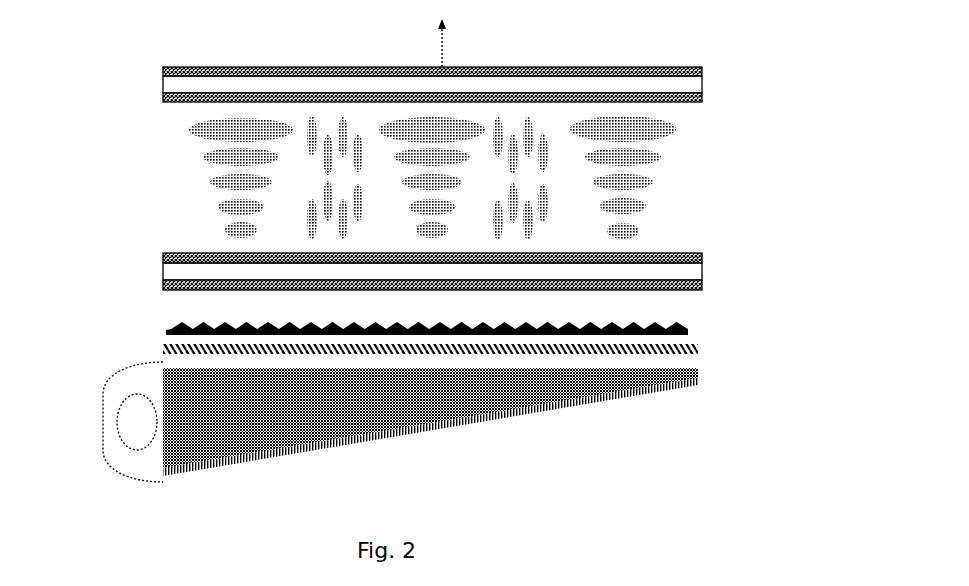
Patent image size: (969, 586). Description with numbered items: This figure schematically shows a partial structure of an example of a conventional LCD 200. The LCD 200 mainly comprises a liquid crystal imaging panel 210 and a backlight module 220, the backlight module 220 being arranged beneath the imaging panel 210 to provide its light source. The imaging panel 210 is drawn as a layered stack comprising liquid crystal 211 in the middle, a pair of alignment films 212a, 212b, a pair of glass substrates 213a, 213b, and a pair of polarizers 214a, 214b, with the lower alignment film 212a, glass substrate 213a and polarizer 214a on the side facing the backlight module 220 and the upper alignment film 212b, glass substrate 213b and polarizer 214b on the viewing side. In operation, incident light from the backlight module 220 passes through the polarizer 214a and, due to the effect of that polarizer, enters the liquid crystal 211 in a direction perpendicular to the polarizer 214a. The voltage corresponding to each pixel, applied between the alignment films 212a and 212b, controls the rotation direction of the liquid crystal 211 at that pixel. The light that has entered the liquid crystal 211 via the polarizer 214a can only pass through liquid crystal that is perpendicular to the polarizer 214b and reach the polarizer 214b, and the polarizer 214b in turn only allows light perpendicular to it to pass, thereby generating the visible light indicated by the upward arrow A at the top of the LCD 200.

The LCD 200 is at (744, 18).
The liquid crystal imaging panel 210 is at (723, 52).
The liquid crystal 211 is at (182, 183).
The alignment film 212a is at (158, 253).
The alignment film 212b is at (158, 101).
The glass substrate 213a is at (160, 272).
The glass substrate 213b is at (160, 86).
The polarizer 214a is at (158, 289).
The polarizer 214b is at (160, 68).
The backlight module 220 is at (723, 320).